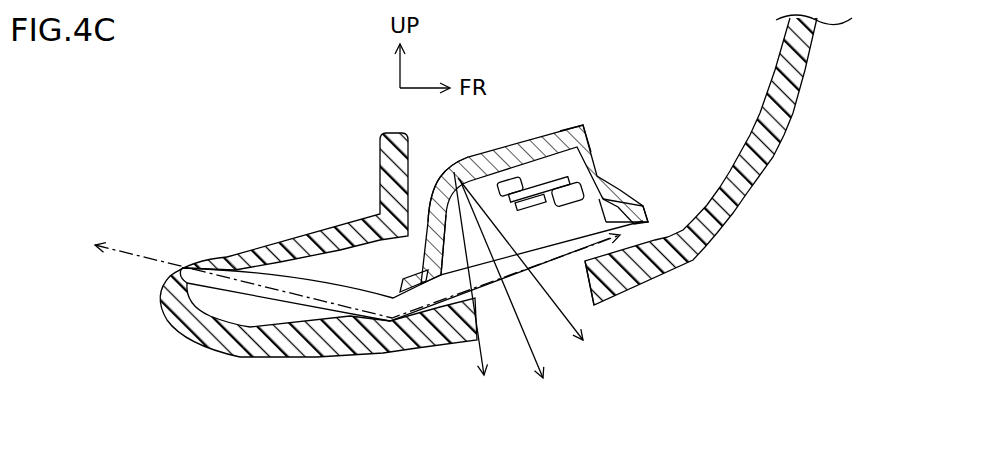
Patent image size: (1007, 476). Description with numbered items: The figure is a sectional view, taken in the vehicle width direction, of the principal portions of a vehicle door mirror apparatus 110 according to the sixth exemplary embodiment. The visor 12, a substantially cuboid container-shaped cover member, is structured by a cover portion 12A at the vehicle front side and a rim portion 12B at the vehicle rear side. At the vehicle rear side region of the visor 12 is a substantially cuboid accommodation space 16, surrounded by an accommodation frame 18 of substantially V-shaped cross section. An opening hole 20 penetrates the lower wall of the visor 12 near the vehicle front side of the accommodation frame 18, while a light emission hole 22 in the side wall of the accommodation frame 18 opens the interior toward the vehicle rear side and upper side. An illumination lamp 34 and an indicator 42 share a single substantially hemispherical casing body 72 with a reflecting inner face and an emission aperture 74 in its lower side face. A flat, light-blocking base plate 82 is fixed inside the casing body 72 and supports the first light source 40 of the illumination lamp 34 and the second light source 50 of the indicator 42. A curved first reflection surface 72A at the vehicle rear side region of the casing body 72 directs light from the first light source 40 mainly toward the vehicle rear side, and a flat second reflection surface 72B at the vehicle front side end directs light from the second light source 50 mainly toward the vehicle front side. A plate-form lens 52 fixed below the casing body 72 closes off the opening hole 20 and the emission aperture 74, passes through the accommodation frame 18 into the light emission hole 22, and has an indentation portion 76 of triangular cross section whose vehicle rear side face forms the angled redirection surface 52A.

The vehicle door mirror apparatus 110 is at (283, 150).
The visor 12 is at (795, 115).
The cover portion 12A is at (770, 170).
The rim portion 12B is at (163, 316).
The accommodation space 16 is at (334, 204).
The accommodation frame 18 is at (373, 355).
The opening hole 20 is at (582, 280).
The light emission hole 22 is at (218, 266).
The illumination lamp 34 is at (462, 158).
The first light source 40 is at (523, 178).
The indicator 42 is at (580, 123).
The second light source 50 is at (570, 217).
The lens 52 is at (497, 300).
The redirection surface 52A is at (618, 312).
The casing body 72 is at (529, 138).
The first reflection surface 72A is at (506, 190).
The second reflection surface 72B is at (612, 200).
The emission aperture 74 is at (410, 277).
The indentation portion 76 is at (672, 266).
The base plate 82 is at (535, 212).